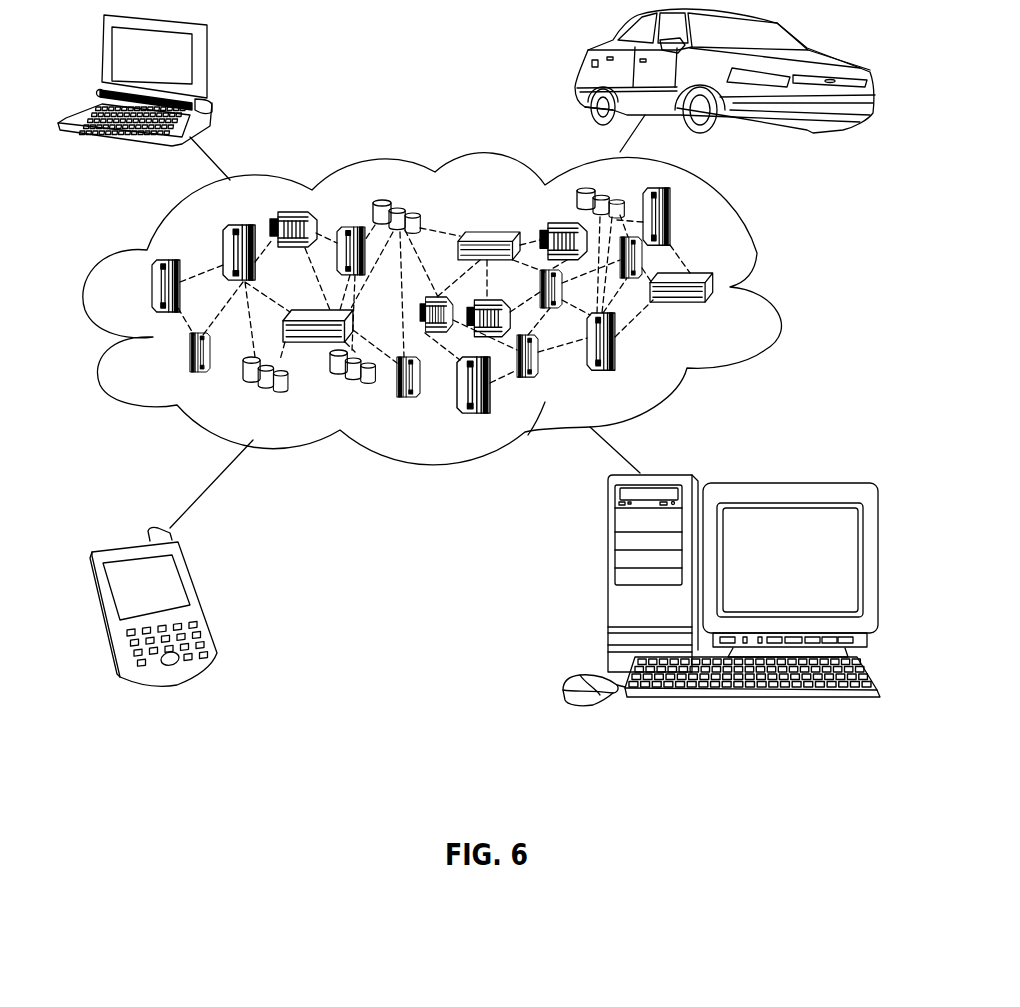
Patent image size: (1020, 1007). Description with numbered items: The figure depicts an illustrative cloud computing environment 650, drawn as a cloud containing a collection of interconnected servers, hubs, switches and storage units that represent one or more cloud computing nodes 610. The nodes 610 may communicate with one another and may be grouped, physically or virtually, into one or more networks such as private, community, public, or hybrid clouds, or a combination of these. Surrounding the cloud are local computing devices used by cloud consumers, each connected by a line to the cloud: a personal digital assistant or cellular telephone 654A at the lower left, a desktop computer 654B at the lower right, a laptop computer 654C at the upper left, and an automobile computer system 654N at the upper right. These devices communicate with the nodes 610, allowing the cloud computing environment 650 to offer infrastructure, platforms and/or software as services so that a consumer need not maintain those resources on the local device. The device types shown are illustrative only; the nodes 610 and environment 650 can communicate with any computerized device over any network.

The cloud computing environment 650 is at (757, 250).
The cloud computing nodes 610 is at (741, 310).
The laptop computer 654C is at (210, 60).
The automobile computer system 654N is at (583, 66).
The personal digital assistant (PDA) or cellular telephone 654A is at (200, 597).
The desktop computer 654B is at (608, 577).